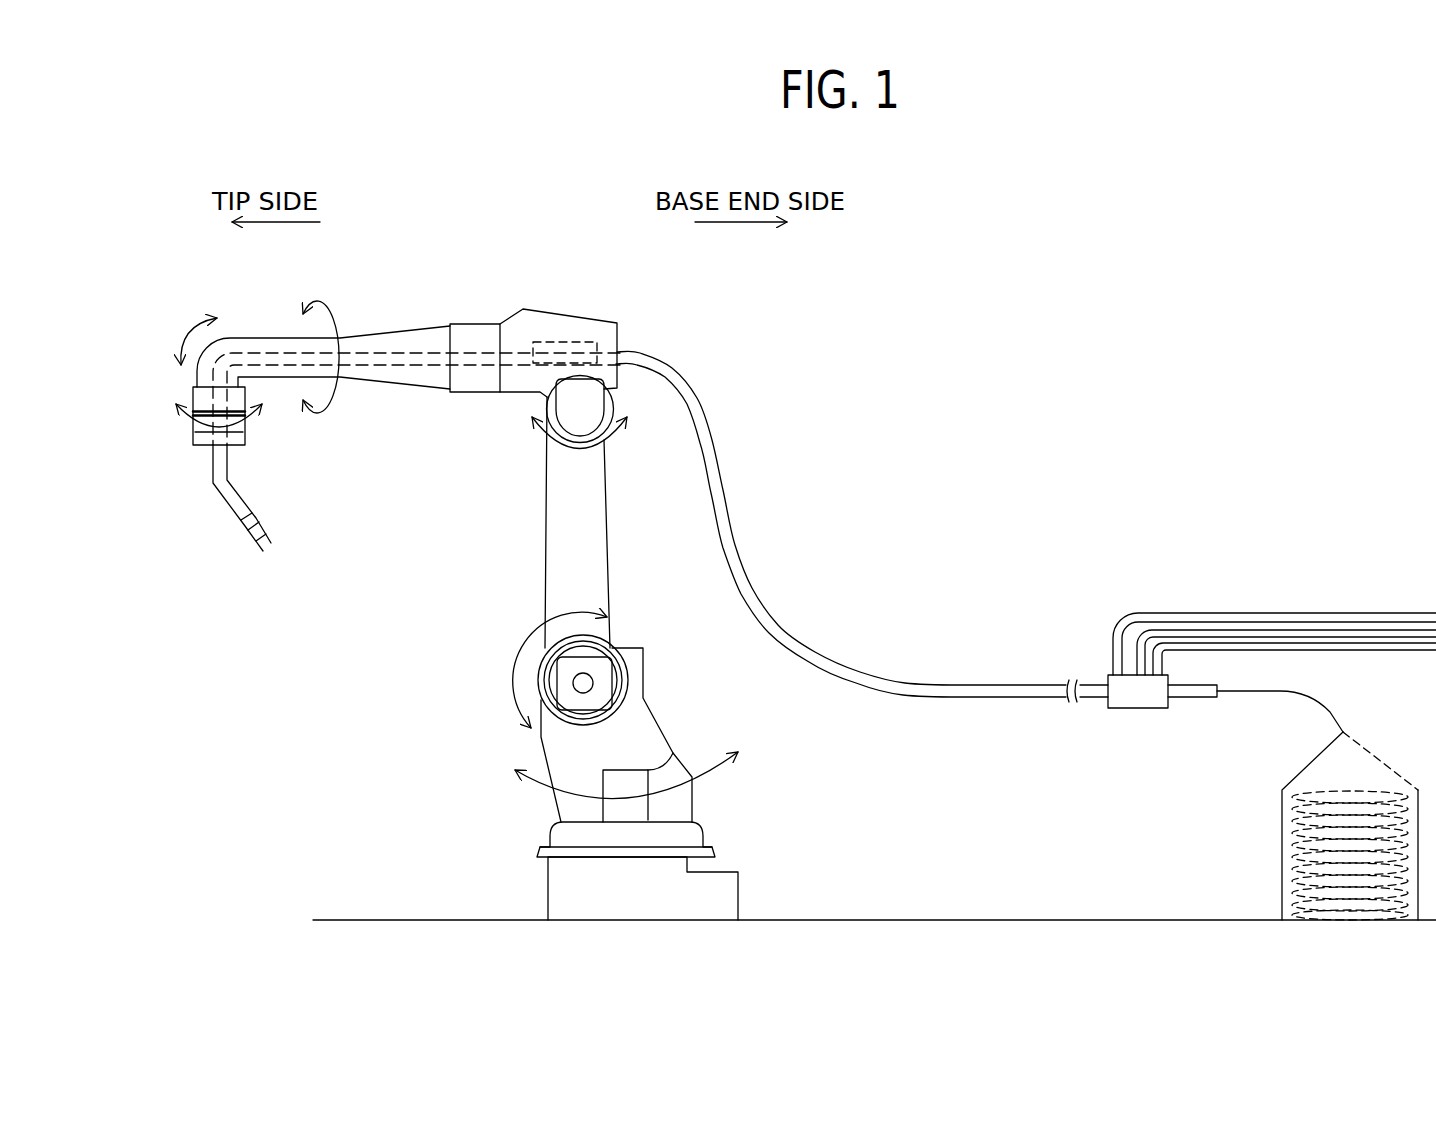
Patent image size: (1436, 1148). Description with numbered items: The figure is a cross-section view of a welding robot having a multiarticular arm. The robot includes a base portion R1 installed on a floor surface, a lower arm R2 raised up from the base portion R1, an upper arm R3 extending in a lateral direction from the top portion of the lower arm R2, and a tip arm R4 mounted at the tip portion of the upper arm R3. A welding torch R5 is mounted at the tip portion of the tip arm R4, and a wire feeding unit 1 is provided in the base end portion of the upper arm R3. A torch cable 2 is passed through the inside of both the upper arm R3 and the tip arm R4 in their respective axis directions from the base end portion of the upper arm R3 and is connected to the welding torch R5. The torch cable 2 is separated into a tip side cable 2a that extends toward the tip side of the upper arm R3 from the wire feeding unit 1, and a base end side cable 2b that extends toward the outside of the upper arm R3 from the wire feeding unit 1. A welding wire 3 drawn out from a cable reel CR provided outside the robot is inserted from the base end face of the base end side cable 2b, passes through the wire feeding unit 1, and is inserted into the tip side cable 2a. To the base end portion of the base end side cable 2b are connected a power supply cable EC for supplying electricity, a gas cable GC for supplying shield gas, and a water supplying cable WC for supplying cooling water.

The wire feeding unit 1 is at (558, 338).
The torch cable 2 is at (395, 613).
The tip side cable 2a is at (371, 365).
The base end side cable 2b is at (728, 528).
The welding wire 3 is at (1250, 693).
The base portion R1 is at (563, 748).
The lower arm R2 is at (557, 533).
The upper arm R3 is at (421, 340).
The tip arm R4 is at (192, 385).
The welding torch R5 is at (198, 438).
The gas cable GC is at (1232, 618).
The water supplying cable WC is at (1297, 634).
The power supply cable EC is at (1313, 647).
The cable reel CR is at (1282, 850).